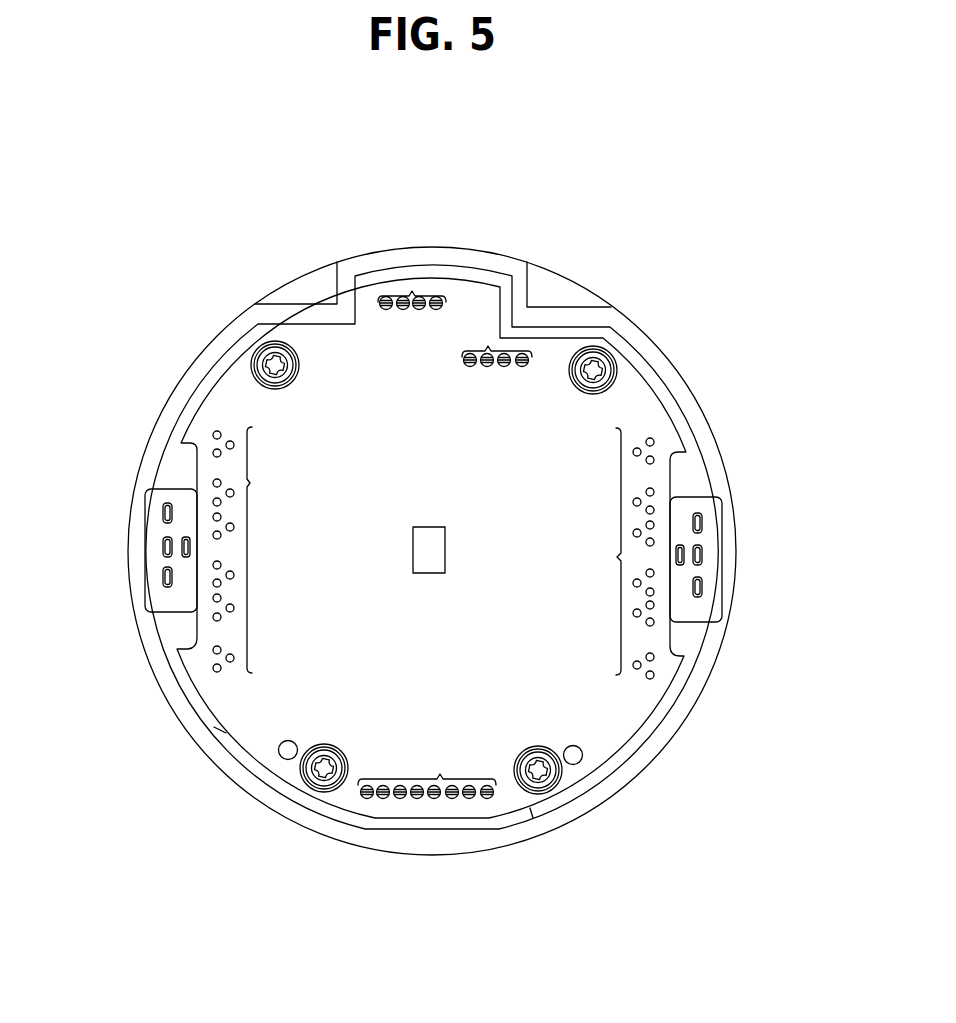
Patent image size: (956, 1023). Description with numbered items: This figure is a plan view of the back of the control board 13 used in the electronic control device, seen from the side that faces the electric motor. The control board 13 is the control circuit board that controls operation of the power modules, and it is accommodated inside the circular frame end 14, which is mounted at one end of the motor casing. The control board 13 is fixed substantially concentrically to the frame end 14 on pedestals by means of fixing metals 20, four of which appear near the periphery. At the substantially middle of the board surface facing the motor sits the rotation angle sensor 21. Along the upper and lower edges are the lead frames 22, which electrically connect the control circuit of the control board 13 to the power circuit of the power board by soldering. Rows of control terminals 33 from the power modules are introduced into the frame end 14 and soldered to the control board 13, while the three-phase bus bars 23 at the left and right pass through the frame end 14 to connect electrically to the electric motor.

The control board 13 is at (597, 710).
The frame end 14 is at (628, 320).
The fixing metal 20 is at (275, 378).
The rotation angle sensor 21 is at (437, 550).
The lead frame 22 is at (428, 290).
The three-phase bus bar 23 is at (163, 515).
The control terminal 33 is at (248, 483).